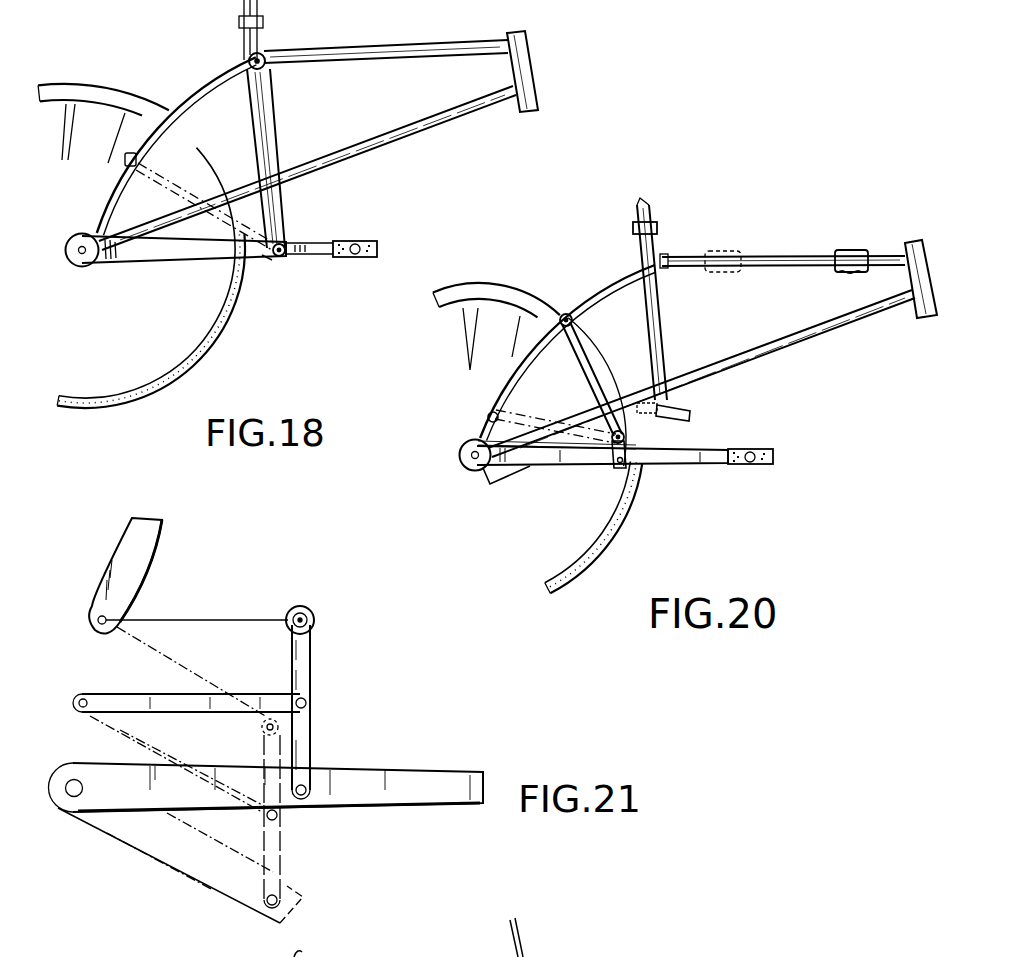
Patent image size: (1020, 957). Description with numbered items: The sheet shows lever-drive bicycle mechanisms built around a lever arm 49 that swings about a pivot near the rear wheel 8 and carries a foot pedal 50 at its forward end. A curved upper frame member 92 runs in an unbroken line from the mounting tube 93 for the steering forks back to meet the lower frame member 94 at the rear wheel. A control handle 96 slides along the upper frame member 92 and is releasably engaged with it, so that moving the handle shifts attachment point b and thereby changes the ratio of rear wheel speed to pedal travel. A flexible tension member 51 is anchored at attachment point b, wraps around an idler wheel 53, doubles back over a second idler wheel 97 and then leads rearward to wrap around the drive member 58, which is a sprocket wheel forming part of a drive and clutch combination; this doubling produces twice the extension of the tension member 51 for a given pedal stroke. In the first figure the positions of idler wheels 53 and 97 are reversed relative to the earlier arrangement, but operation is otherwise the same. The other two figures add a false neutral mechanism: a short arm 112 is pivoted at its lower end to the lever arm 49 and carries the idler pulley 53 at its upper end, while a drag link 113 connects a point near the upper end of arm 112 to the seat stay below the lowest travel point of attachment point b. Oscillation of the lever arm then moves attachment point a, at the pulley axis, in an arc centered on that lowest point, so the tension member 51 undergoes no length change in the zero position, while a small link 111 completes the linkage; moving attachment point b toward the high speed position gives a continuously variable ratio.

In FIG. 18, the rear wheel 8 is at (88, 86).
In FIG. 20, the rear wheel 8 is at (502, 291).
In FIG. 18, the lever arm 49 is at (147, 258).
In FIG. 20, the lever arm 49 is at (688, 464).
In FIG. 21, the lever arm 49 is at (352, 775).
In FIG. 18, the foot pedal 50 is at (380, 250).
In FIG. 20, the foot pedal 50 is at (773, 458).
In FIG. 18, the tension member 51 is at (281, 130).
In FIG. 20, the tension member 51 is at (584, 374).
In FIG. 18, the idler wheel 53 is at (268, 66).
In FIG. 20, the idler wheel 53 is at (612, 460).
In FIG. 21, the idler wheel 53 is at (316, 618).
In FIG. 18, the drive member 58 is at (81, 268).
In FIG. 20, the drive member 58 is at (467, 463).
In FIG. 18, the upper frame member 92 is at (406, 48).
In FIG. 20, the upper frame member 92 is at (892, 249).
In FIG. 20, the mounting tube 93 is at (926, 254).
In FIG. 18, the lower frame member 94 is at (440, 122).
In FIG. 20, the lower frame member 94 is at (822, 343).
In FIG. 20, the control handle 96 is at (851, 250).
In FIG. 18, the idler wheel 97 is at (284, 257).
In FIG. 20, the idler wheel 97 is at (566, 312).
In FIG. 20, the link 111 is at (648, 442).
In FIG. 20, the short arm 112 is at (535, 440).
In FIG. 21, the short arm 112 is at (311, 682).
In FIG. 21, the drag link 113 is at (150, 694).
In FIG. 18, the first attachment point a is at (272, 259).
In FIG. 20, the first attachment point a is at (681, 428).
In FIG. 20, the second attachment point b is at (578, 322).